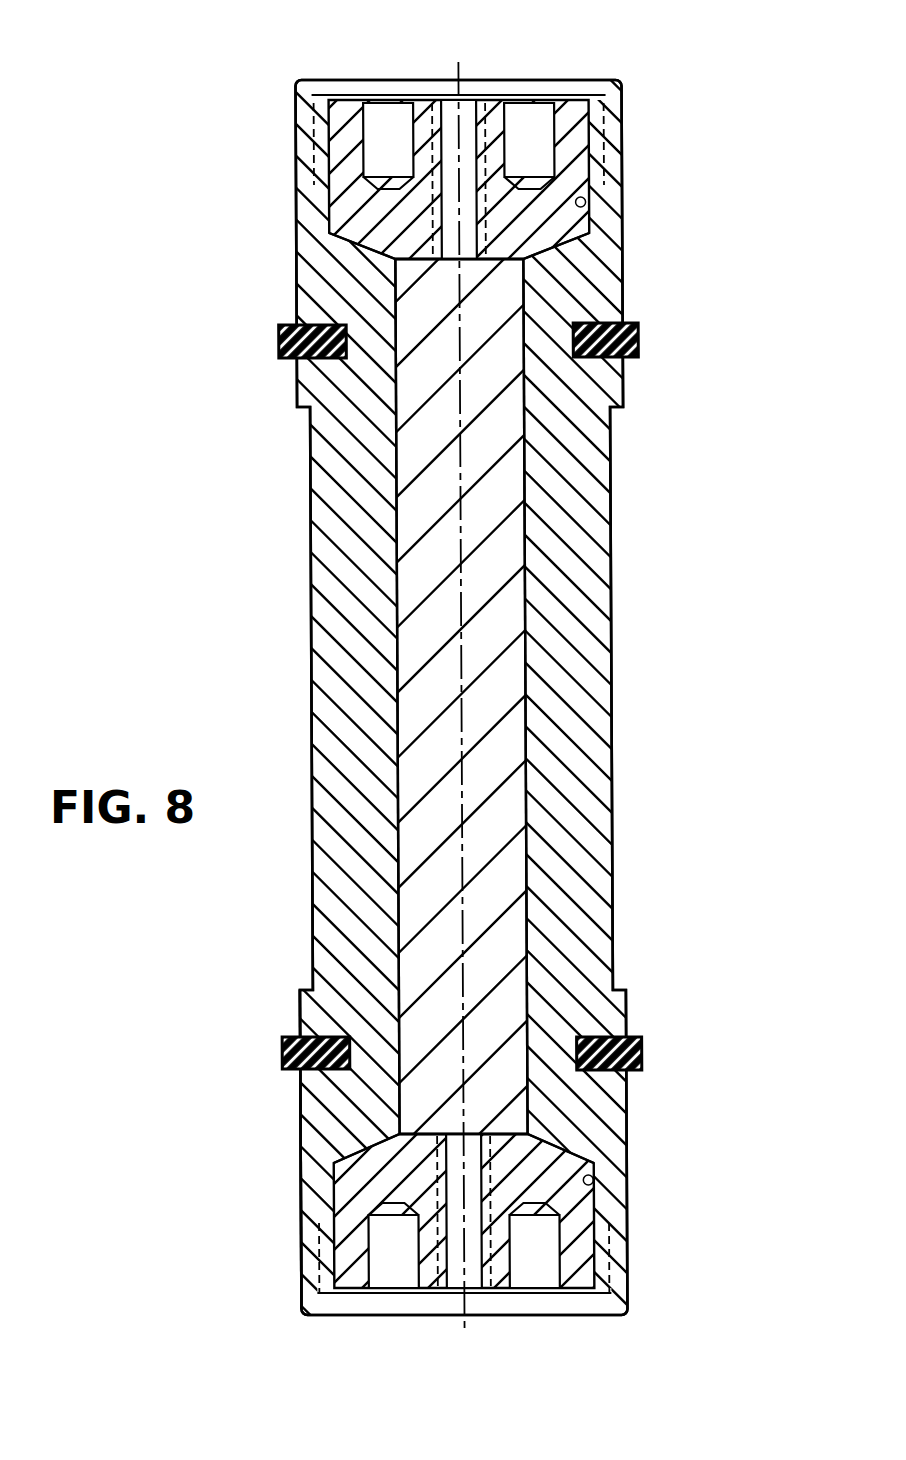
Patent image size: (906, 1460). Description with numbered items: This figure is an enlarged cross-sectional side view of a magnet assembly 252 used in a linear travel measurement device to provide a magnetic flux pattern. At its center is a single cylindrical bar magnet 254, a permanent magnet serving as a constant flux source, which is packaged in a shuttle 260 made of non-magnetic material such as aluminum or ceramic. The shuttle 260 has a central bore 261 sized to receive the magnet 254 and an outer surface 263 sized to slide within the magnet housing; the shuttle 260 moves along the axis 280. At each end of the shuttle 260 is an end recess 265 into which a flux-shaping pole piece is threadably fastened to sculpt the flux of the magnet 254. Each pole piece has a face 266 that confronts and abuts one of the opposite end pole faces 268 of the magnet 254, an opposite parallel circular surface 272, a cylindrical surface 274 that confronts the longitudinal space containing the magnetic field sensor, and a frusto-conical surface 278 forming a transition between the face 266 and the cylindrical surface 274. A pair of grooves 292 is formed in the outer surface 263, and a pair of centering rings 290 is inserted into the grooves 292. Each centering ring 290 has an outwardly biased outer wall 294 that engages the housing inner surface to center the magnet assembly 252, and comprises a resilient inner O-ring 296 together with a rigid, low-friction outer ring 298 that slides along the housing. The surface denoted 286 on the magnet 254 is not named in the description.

The magnet assembly 252 is at (146, 170).
The bar magnet 254 is at (487, 584).
The shuttle 260 is at (340, 580).
The central bore 261 is at (392, 663).
The outer surface 263 is at (300, 1170).
The end recesses 265 is at (590, 205).
The face 266 is at (520, 262).
The end pole faces 268 is at (392, 259).
The circular surface 272 is at (576, 96).
The cylindrical surface 274 is at (333, 213).
The frusto-conical surface 278 is at (557, 258).
The axis 280 is at (457, 473).
The core outer surface 286 is at (527, 665).
The centering rings 290 is at (266, 331).
The grooves 292 is at (332, 362).
The outer wall 294 is at (642, 342).
The inner O-ring 296 is at (583, 345).
The outer ring 298 is at (612, 345).